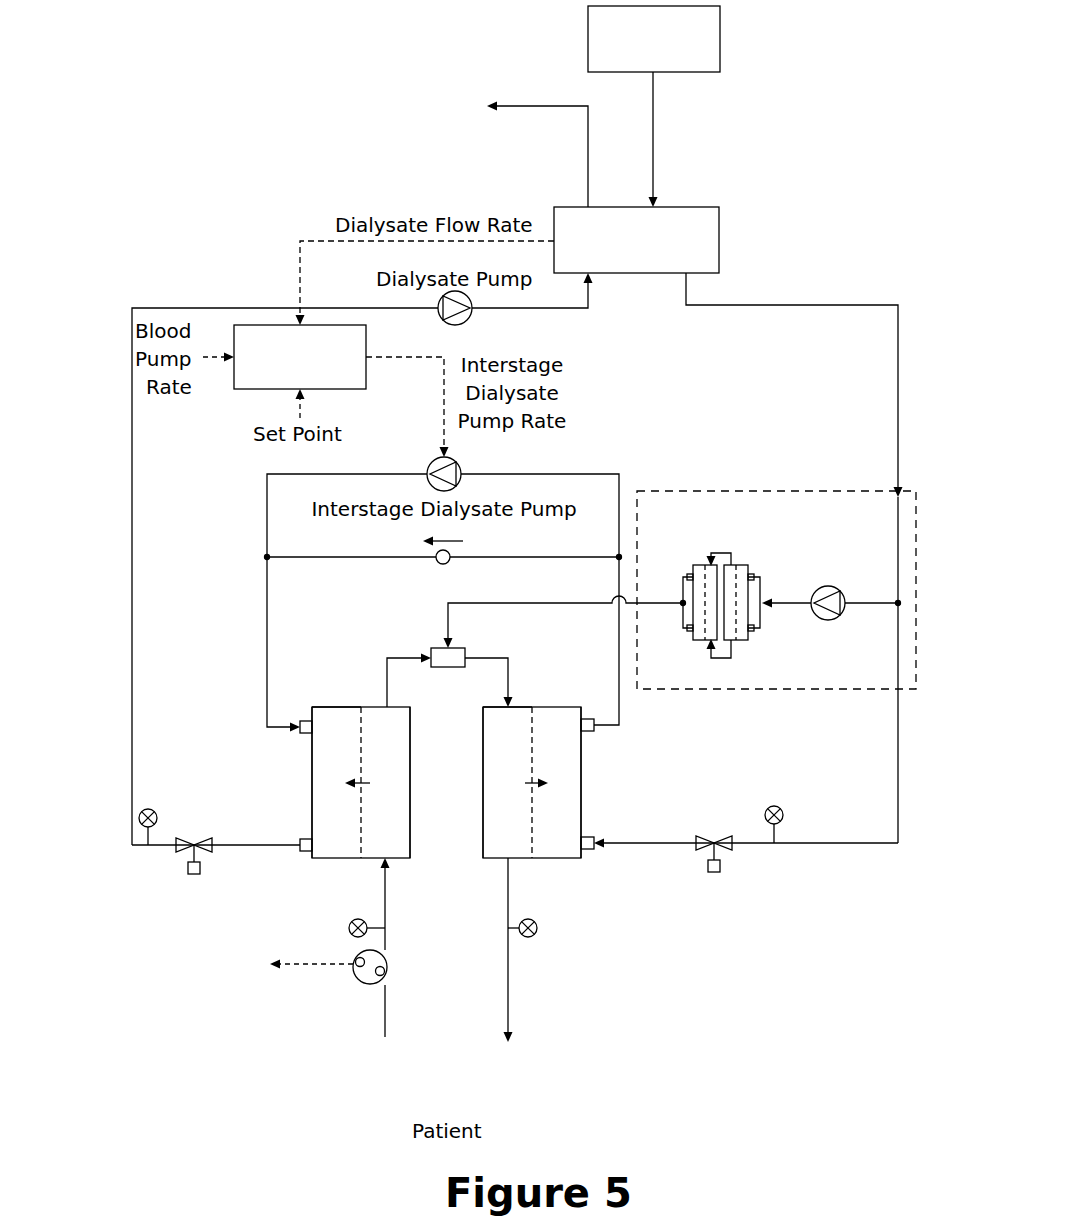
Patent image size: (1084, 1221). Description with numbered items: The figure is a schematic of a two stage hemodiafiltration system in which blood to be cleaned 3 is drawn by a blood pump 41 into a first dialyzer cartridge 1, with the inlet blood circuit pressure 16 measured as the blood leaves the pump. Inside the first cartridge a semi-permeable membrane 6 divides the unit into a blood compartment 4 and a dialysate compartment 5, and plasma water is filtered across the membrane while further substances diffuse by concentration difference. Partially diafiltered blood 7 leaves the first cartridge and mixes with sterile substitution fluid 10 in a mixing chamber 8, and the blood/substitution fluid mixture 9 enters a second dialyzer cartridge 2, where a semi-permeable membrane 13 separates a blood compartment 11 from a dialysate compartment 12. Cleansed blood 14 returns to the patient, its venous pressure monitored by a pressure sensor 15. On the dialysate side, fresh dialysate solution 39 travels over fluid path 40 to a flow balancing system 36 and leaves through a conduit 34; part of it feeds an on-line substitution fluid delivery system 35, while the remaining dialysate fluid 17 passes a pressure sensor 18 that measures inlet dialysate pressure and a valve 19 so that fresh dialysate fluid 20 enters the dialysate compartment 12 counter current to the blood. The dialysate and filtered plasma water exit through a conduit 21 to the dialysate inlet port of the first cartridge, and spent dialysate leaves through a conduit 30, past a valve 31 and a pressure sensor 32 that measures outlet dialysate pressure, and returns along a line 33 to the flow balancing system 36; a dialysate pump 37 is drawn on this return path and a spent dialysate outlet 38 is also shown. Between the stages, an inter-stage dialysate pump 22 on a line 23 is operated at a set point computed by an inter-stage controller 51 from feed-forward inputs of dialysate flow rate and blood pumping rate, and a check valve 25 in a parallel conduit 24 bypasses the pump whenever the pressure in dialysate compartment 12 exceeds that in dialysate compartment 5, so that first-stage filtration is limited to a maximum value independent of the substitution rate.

The first dialyzer cartridge 1 is at (311, 780).
The second dialyzer cartridge 2 is at (582, 784).
The blood to be cleaned 3 is at (386, 900).
The blood compartment 4 is at (391, 832).
The dialysate compartment 5 is at (346, 832).
The semi-permeable membrane 6 is at (360, 743).
The partially diafiltered blood 7 is at (387, 683).
The mixing chamber 8 is at (462, 668).
The blood/substitution fluid mixture 9 is at (508, 656).
The sterile substitution fluid 10 is at (447, 625).
The blood compartment 11 is at (522, 842).
The dialysate compartment 12 is at (571, 842).
The semi-permeable membrane 13 is at (532, 740).
The cleansed blood 14 is at (509, 895).
The pressure sensor 15 is at (529, 938).
The inlet blood circuit pressure 16 is at (353, 920).
The remaining dialysate fluid 17 is at (898, 765).
The pressure sensor 18 is at (783, 816).
The dialysate inlet valve 19 is at (733, 838).
The fresh dialysate fluid 20 is at (652, 844).
The conduit 21 is at (619, 680).
The inter-stage dialysate pump 22 is at (458, 466).
The interstage dialysate line 23 is at (267, 640).
The conduit 24 is at (560, 566).
The check valve 25 is at (442, 565).
The conduit 30 is at (298, 843).
The dialysate outlet valve 31 is at (212, 838).
The pressure sensor 32 is at (154, 812).
The spent dialysate return line 33 is at (132, 605).
The conduit 34 is at (898, 405).
The on-line substitution fluid delivery system 35 is at (678, 490).
The flow balancing system 36 is at (719, 227).
The dialysate pump 37 is at (467, 321).
The spent dialysate drain line 38 is at (588, 140).
The fresh dialysate solution 39 is at (720, 16).
The fluid path 40 is at (653, 143).
The blood pump 41 is at (388, 970).
The inter-stage controller 51 is at (236, 389).